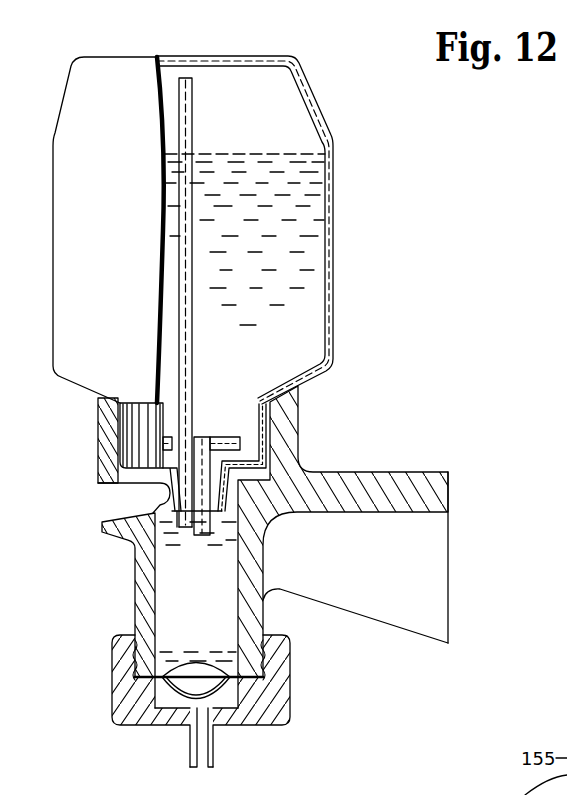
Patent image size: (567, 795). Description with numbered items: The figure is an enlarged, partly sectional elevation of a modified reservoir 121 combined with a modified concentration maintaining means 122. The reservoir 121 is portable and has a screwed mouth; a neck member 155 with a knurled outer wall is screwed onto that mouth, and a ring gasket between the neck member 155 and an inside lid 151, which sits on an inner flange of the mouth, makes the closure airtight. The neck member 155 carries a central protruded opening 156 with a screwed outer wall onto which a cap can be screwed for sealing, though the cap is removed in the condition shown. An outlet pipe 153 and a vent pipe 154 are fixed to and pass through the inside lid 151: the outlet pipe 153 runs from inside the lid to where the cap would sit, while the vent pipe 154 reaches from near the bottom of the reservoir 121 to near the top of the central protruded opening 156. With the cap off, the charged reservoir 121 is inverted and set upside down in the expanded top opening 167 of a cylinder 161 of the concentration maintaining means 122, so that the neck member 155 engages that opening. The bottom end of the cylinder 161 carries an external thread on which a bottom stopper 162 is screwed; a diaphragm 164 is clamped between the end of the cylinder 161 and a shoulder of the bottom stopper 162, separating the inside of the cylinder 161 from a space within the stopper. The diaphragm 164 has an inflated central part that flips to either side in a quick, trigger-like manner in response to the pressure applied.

The reservoir 121 is at (388, 183).
The concentration maintaining means 122 is at (213, 608).
The inside lid 151 is at (224, 437).
The outlet pipe 153 is at (197, 537).
The vent pipe 154 is at (192, 292).
The neck member 155 is at (263, 450).
The central protruded opening 156 is at (182, 523).
The cylinder 161 is at (137, 600).
The bottom stopper 162 is at (118, 711).
The diaphragm 164 is at (215, 699).
The expanded top opening 167 is at (98, 435).